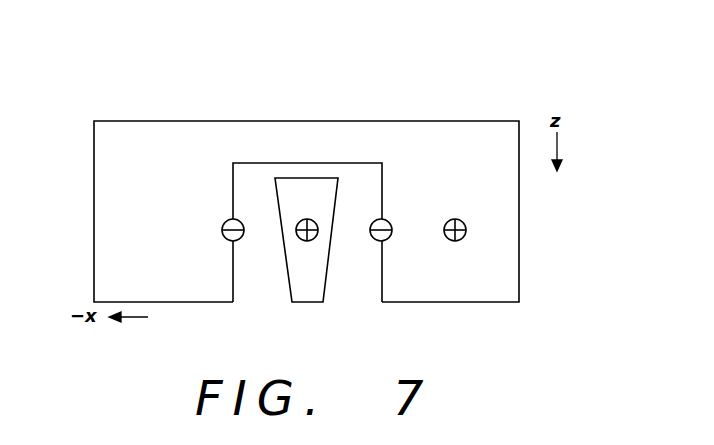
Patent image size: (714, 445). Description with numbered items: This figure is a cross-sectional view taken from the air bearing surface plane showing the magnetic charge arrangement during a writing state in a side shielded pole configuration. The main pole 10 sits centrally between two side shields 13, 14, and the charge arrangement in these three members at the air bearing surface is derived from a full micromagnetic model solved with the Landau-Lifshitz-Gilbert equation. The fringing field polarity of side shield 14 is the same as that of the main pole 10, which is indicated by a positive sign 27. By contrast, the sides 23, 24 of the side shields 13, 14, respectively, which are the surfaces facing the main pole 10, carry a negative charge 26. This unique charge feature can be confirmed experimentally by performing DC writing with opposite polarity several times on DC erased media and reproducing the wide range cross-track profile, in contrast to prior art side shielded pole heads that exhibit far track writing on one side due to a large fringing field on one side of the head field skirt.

The main pole 10 is at (305, 288).
The side shield 13 is at (112, 220).
The side shield 14 is at (498, 277).
The side of side shield 23 is at (233, 277).
The side of side shield 24 is at (381, 277).
The negative charge 26 is at (224, 232).
The positive sign 27 is at (307, 219).